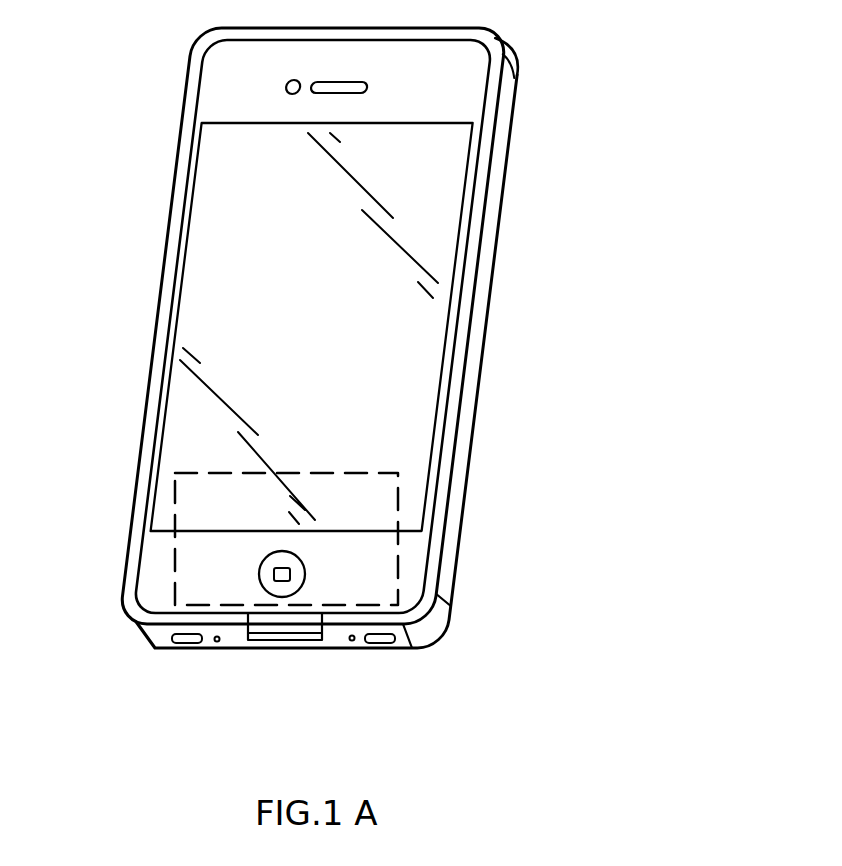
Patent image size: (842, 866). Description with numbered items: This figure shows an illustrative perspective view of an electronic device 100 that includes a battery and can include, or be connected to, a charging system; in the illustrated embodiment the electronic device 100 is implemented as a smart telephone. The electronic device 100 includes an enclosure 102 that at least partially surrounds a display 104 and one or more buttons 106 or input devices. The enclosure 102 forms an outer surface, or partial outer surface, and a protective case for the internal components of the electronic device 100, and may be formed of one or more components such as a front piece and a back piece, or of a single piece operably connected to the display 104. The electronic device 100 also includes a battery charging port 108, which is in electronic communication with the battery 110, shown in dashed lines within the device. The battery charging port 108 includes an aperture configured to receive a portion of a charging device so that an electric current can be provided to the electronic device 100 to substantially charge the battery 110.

The electronic device 100 is at (575, 94).
The enclosure 102 is at (187, 84).
The display 104 is at (172, 453).
The button 106 is at (281, 583).
The battery charging port 108 is at (295, 652).
The battery 110 is at (397, 473).